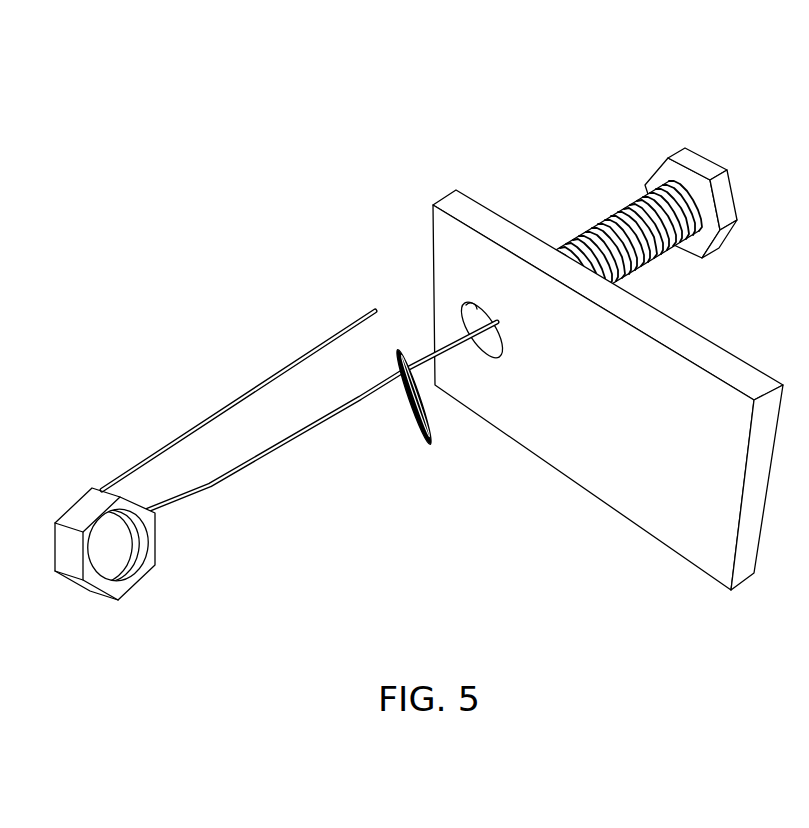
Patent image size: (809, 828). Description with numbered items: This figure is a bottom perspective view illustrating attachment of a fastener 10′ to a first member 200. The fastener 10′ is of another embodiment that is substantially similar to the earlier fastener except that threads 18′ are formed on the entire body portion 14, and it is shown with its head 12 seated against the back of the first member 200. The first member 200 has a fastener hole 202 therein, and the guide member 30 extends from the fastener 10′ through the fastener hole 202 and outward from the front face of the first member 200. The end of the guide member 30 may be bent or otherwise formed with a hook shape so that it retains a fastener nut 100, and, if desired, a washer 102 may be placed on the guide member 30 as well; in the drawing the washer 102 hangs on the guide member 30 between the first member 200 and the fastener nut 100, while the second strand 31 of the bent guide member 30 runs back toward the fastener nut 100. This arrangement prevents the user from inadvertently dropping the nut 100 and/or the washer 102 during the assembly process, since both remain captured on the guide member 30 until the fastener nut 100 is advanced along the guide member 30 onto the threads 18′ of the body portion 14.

The fastener 10′ is at (667, 208).
The bolt head 12 is at (728, 158).
The body portion 14 is at (617, 245).
The threads 18′ is at (629, 216).
The first member 200 is at (588, 360).
The fastener hole 202 is at (470, 312).
The washer 102 is at (426, 440).
The fastener nut 100 is at (155, 547).
The guide member 30 is at (297, 437).
The second retaining wire 31 is at (122, 476).